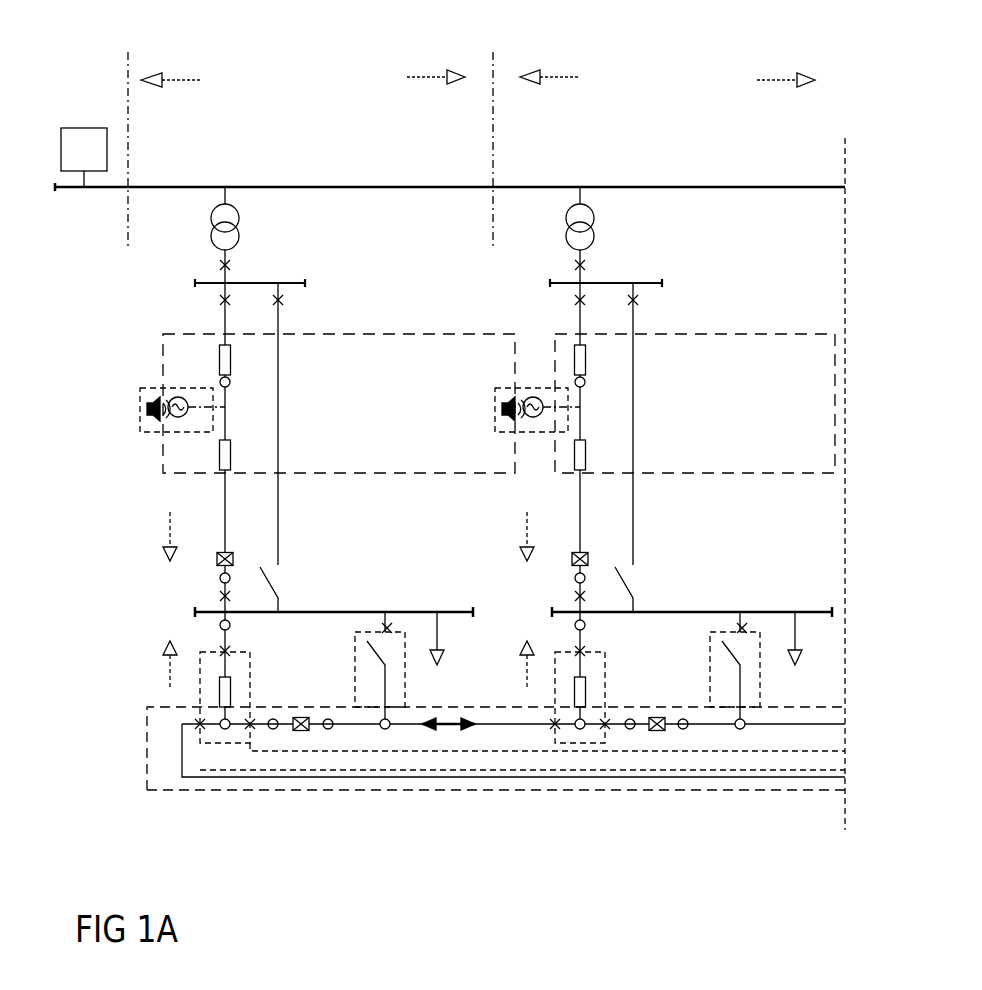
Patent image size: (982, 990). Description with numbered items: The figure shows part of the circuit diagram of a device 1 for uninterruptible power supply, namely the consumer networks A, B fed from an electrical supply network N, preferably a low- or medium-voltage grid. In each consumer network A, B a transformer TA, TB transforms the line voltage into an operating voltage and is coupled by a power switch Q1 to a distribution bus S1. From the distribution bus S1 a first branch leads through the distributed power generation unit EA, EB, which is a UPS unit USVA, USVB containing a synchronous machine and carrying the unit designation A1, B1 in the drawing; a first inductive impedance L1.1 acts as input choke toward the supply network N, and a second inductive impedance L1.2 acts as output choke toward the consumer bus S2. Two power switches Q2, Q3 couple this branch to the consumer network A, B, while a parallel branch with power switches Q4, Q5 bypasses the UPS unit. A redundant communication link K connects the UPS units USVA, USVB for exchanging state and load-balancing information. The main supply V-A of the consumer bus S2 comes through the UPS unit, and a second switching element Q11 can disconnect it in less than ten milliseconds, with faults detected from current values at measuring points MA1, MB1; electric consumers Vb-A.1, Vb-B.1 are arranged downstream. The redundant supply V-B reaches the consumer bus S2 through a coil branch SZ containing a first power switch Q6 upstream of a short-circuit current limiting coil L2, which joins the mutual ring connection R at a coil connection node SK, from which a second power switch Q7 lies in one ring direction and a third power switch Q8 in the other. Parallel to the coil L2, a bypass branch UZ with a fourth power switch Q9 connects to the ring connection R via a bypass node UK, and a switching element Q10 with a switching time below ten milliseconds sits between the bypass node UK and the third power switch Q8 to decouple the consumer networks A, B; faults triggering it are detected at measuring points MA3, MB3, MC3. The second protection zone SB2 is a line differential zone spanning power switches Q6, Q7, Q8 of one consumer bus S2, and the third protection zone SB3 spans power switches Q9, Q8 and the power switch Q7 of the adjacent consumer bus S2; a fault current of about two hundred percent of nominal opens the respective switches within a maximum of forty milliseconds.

The device 1 is at (110, 88).
The electrical supply network N is at (84, 157).
The consumer network A is at (303, 79).
The consumer network B is at (667, 79).
The transformer TA is at (239, 455).
The transformer TB is at (594, 455).
The power switch Q1 is at (415, 265).
The power switch Q2 is at (415, 300).
The power switch Q3 is at (415, 597).
The power switch Q4 is at (468, 424).
The power switch Q5 is at (460, 589).
The first power switch Q6 is at (414, 661).
The second power switch Q7 is at (377, 729).
The third power switch Q8 is at (419, 729).
The fourth power switch Q9 is at (562, 668).
The switching element Q10 is at (478, 736).
The second switching element Q11 is at (421, 560).
The distribution bus S1 is at (444, 283).
The consumer bus S2 is at (516, 609).
The redundant communication link K is at (428, 333).
The distributed power generation unit EA is at (143, 390).
The distributed power generation unit EB is at (505, 390).
The first inductive impedance L1.1 is at (422, 360).
The second inductive impedance L1.2 is at (422, 455).
The short-circuit current limiting coil L2 is at (419, 692).
The measuring point MA1 is at (231, 381).
The measuring point MB1 is at (586, 381).
The measuring point MA3 is at (231, 626).
The measuring point MB3 is at (586, 626).
The measuring point MC3 is at (630, 730).
The UPS unit USVA is at (140, 427).
The UPS unit USVB is at (495, 427).
The UPS unit A1 is at (198, 425).
The UPS unit B1 is at (553, 425).
The main supply V-A is at (343, 546).
The redundant supply V-B is at (344, 656).
The electric consumer Vb-A.1 is at (441, 652).
The electric consumer Vb-B.1 is at (798, 652).
The bypass branch UZ is at (382, 640).
The coil branch SZ is at (242, 667).
The second protection zone SB2 is at (402, 697).
The third protection zone SB3 is at (496, 748).
The coil connection node SK is at (225, 730).
The bypass node UK is at (385, 730).
The ring connection R is at (292, 777).